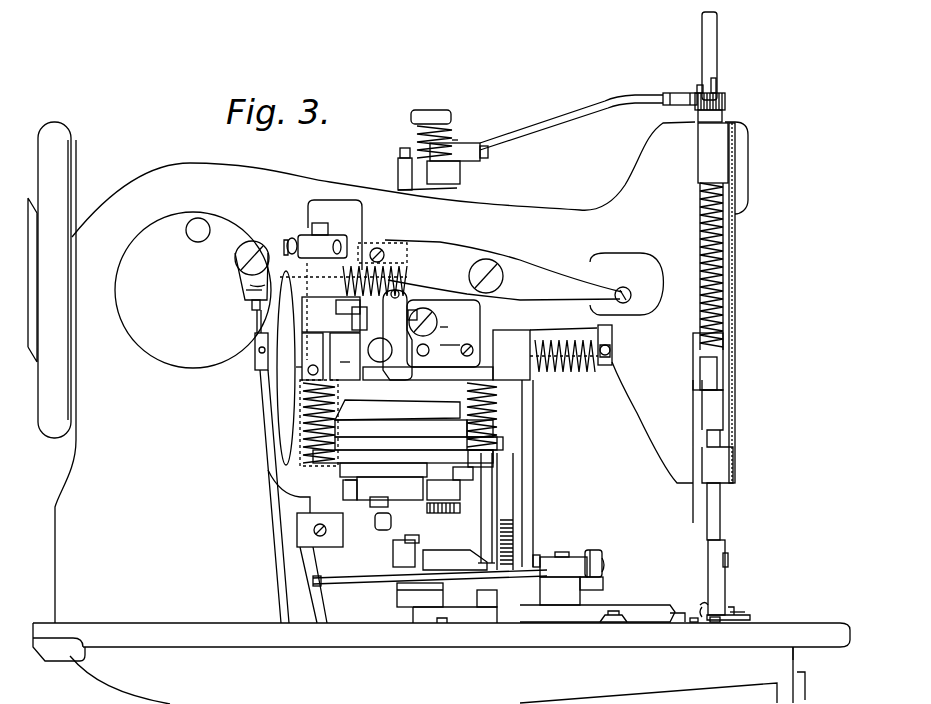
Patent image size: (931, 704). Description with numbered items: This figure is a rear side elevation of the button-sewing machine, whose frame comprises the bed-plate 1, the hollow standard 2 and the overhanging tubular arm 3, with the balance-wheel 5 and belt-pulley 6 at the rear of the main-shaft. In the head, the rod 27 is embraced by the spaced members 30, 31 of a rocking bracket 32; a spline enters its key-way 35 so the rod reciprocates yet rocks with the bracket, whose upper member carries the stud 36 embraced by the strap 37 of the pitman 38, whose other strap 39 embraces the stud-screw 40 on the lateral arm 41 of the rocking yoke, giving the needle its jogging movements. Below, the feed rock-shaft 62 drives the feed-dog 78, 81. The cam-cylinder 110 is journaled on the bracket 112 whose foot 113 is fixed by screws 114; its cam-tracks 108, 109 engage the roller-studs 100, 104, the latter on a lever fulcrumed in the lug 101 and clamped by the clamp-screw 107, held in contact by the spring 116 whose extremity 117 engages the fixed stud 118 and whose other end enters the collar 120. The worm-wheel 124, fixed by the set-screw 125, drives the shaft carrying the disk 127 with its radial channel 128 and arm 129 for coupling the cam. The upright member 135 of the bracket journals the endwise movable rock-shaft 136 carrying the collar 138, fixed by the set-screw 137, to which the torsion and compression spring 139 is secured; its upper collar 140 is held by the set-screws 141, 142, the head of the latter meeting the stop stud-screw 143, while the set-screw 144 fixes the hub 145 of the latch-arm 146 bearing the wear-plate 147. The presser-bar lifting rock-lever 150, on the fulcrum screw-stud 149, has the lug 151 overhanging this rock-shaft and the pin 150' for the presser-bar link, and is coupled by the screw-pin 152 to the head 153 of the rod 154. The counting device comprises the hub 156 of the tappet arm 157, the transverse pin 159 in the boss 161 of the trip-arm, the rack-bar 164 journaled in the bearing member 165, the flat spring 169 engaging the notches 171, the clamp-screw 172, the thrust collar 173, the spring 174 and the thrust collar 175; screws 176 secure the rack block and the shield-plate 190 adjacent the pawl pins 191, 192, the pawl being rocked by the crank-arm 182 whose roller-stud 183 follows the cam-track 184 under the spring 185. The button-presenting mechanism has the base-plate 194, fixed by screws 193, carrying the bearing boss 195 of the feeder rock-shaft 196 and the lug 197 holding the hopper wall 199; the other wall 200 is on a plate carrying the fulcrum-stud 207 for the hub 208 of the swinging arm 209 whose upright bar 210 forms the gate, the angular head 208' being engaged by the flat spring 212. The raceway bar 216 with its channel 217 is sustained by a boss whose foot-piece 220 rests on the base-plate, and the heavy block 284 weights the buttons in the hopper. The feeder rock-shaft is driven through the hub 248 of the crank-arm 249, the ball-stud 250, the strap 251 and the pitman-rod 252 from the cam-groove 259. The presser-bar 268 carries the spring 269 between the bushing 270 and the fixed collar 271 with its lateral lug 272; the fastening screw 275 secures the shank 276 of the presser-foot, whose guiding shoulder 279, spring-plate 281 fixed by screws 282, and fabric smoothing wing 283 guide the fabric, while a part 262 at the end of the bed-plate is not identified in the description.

The bed-plate 1 is at (441, 663).
The hollow standard 2 is at (117, 381).
The overhanging tubular arm 3 is at (535, 528).
The balance-wheel 5 is at (54, 280).
The belt-pulley 6 is at (29, 280).
The rod 27 is at (712, 60).
The spaced member of rocking bracket 30 is at (730, 240).
The upper member of rocking bracket 31 is at (718, 96).
The rocking bracket 32 is at (743, 172).
The longitudinal key-way 35 is at (717, 80).
The stud 36 is at (700, 85).
The strap 37 is at (680, 97).
The pitman 38 is at (563, 127).
The strap 39 is at (459, 152).
The stud-screw 40 is at (452, 140).
The lateral arm 41 is at (429, 175).
The feed rock-shaft 62 is at (648, 693).
The feed-dog 78 is at (740, 618).
The feed-dog 81 is at (702, 615).
The roller-stud 100 is at (468, 457).
The lateral lug 101 is at (447, 492).
The roller-stud 104 is at (453, 473).
The clamp-screw 107 is at (447, 507).
The peripheral cam-track 108 is at (403, 458).
The peripheral cam-track 109 is at (383, 471).
The cam-cylinder 110 is at (401, 430).
The bracket 112 is at (428, 374).
The foot 113 is at (435, 303).
The screws 114 is at (437, 313).
The spring 116 is at (413, 132).
The spring extremity 117 is at (398, 157).
The fixed stud 118 is at (398, 168).
The collar 120 is at (450, 115).
The worm-wheel 124 is at (408, 280).
The set-screw 125 is at (382, 243).
The disk 127 is at (390, 488).
The radial channel 128 is at (345, 497).
The arm 129 is at (350, 485).
The upright member 135 is at (277, 385).
The rock-shaft 136 is at (310, 224).
The set-screw 137 is at (314, 356).
The collar 138 is at (296, 367).
The torsion and compression spring 139 is at (333, 402).
The collar 140 is at (322, 240).
The set-screw 141 is at (334, 240).
The set-screw 142 is at (292, 230).
The stud-screw 143 is at (284, 243).
The set-screw 144 is at (313, 540).
The hub 145 is at (310, 502).
The latch-arm 146 is at (378, 522).
The wear-plate 147 is at (388, 503).
The fulcrum screw-stud 149 is at (493, 277).
The presser-bar lifting rock-lever 150 is at (503, 270).
The pin 150' is at (626, 284).
The lug 151 is at (333, 205).
The screw-pin 152 is at (237, 262).
The head 153 is at (248, 290).
The rod 154 is at (270, 480).
The hub 156 is at (331, 314).
The tappet arm 157 is at (338, 308).
The transverse pin 159 is at (420, 310).
The boss 161 is at (355, 323).
The rack-bar 164 is at (609, 350).
The bearing member 165 is at (511, 355).
The flat spring 169 is at (397, 335).
The notches 171 is at (353, 357).
The clamp-screw 172 is at (380, 350).
The thrust collar 173 is at (257, 340).
The spring 174 is at (570, 358).
The thrust collar 175 is at (602, 336).
The screws 176 is at (462, 350).
The crank-arm 182 is at (487, 432).
The roller-stud 183 is at (502, 445).
The peripheral cam-track 184 is at (416, 445).
The spring 185 is at (498, 402).
The shield-plate 190 is at (448, 338).
The pin 191 is at (443, 327).
The pin 192 is at (422, 347).
The screws 193 is at (620, 615).
The base-plate 194 is at (655, 605).
The bearing boss 195 is at (560, 591).
The feeder rock-shaft 196 is at (563, 553).
The lug 197 is at (535, 558).
The flat bar 199 is at (532, 492).
The side wall 200 is at (490, 328).
The fulcrum-stud 207 is at (413, 540).
The hub 208 is at (403, 590).
The angular head 208' is at (390, 551).
The swinging arm 209 is at (447, 583).
The upright bar 210 is at (480, 543).
The flat spring 212 is at (455, 560).
The bar 216 is at (672, 618).
The channel 217 is at (695, 622).
The foot-piece 220 is at (483, 602).
The hub 248 is at (563, 567).
The crank-arm 249 is at (603, 587).
The ball-stud 250 is at (602, 573).
The strap 251 is at (605, 560).
The pitman-rod 252 is at (365, 577).
The cam-groove 259 is at (397, 410).
The bed end 262 is at (790, 620).
The presser-bar 268 is at (720, 515).
The spring 269 is at (720, 305).
The bushing 270 is at (700, 197).
The fixed collar 271 is at (733, 363).
The lateral lug 272 is at (693, 372).
The fastening screw 275 is at (728, 553).
The shank 276 is at (725, 583).
The guiding shoulder 279 is at (715, 622).
The spring-plate 281 is at (733, 612).
The screws 282 is at (733, 606).
The fabric smoothing wing 283 is at (705, 605).
The heavy block 284 is at (512, 511).